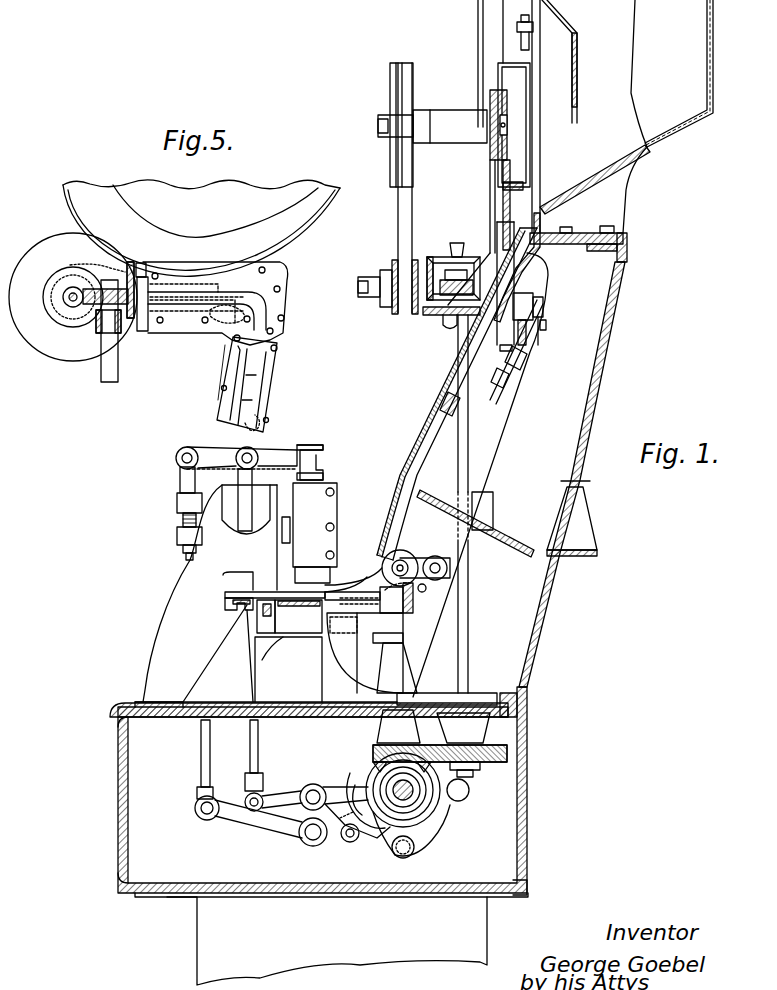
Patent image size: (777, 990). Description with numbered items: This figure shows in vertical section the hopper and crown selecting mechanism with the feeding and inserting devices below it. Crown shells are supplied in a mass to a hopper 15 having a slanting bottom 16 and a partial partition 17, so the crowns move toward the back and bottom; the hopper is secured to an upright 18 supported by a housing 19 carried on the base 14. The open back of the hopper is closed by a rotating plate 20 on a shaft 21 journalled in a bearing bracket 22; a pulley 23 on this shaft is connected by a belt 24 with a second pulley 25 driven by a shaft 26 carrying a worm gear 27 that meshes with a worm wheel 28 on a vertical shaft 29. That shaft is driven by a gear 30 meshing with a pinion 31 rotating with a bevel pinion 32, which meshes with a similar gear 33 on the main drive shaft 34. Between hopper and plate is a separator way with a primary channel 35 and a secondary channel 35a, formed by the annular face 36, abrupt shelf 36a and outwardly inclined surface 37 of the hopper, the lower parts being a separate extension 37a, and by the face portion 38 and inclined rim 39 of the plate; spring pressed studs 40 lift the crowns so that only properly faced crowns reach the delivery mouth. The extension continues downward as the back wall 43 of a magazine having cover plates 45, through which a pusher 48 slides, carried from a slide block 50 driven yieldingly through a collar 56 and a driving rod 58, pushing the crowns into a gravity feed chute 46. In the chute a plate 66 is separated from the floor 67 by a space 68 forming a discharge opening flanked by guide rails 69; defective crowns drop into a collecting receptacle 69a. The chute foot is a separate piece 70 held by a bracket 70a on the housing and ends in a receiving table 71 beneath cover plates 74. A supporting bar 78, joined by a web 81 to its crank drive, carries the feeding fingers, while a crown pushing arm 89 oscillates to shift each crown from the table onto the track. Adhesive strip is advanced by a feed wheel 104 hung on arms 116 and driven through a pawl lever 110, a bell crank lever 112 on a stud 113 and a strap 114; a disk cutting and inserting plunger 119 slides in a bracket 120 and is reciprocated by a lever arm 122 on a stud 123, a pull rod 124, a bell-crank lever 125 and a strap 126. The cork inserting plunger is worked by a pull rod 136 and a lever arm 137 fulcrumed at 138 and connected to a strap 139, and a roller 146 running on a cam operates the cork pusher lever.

In FIG. 1, the base 14 is at (347, 932).
In FIG. 5, the hopper 15 is at (201, 228).
In FIG. 1, the hopper 15 is at (668, 116).
In FIG. 1, the slanting bottom 16 is at (595, 179).
In FIG. 1, the partial partition 17 is at (578, 78).
In FIG. 1, the upright 18 is at (594, 400).
In FIG. 1, the housing 19 is at (527, 830).
In FIG. 1, the rotating plate 20 is at (498, 80).
In FIG. 1, the shaft 21 is at (378, 128).
In FIG. 1, the bearing bracket 22 is at (450, 126).
In FIG. 1, the pulley 23 is at (392, 103).
In FIG. 1, the belt 24 is at (411, 222).
In FIG. 1, the second pulley 25 is at (392, 268).
In FIG. 5, the shaft 26 is at (70, 300).
In FIG. 1, the shaft 26 is at (365, 279).
In FIG. 5, the worm gear 27 is at (75, 312).
In FIG. 1, the worm gear 27 is at (462, 268).
In FIG. 5, the worm wheel 28 is at (131, 262).
In FIG. 1, the worm wheel 28 is at (447, 327).
In FIG. 5, the vertical shaft 29 is at (117, 360).
In FIG. 1, the vertical shaft 29 is at (467, 478).
In FIG. 1, the gear 30 is at (507, 755).
In FIG. 1, the pinion 31 is at (380, 752).
In FIG. 1, the bevel pinion 32 is at (370, 770).
In FIG. 1, the gear 33 is at (417, 806).
In FIG. 1, the main drive shaft 34 is at (412, 795).
In FIG. 1, the primary channel 35 is at (542, 218).
In FIG. 1, the secondary channel 35a is at (535, 255).
In FIG. 1, the annular rim or face 36 is at (560, 224).
In FIG. 1, the ledge or shelf 36a is at (515, 225).
In FIG. 1, the outwardly inclined surface 37 is at (500, 235).
In FIG. 1, the extension 37a is at (628, 240).
In FIG. 1, the face portion 38 is at (540, 195).
In FIG. 1, the inclined rim 39 is at (525, 270).
In FIG. 1, the spring pressed studs 40 is at (533, 30).
In FIG. 1, the back wall 43 is at (543, 305).
In FIG. 5, the cover plates 45 is at (288, 272).
In FIG. 1, the cover plates 45 is at (533, 290).
In FIG. 5, the gravity feed chute 46 is at (222, 408).
In FIG. 1, the gravity feed chute 46 is at (428, 432).
In FIG. 5, the pusher 48 is at (212, 292).
In FIG. 1, the pusher 48 is at (482, 330).
In FIG. 5, the slide block 50 is at (232, 312).
In FIG. 1, the slide block 50 is at (540, 328).
In FIG. 1, the collar 56 is at (540, 318).
In FIG. 5, the driving rod 58 is at (170, 288).
In FIG. 1, the driving rod 58 is at (545, 312).
In FIG. 5, the plate 66 is at (268, 355).
In FIG. 1, the plate 66 is at (481, 342).
In FIG. 1, the floor 67 is at (455, 404).
In FIG. 5, the space 68 is at (257, 375).
In FIG. 1, the space 68 is at (471, 363).
In FIG. 5, the ledge or guide rail 69 is at (245, 403).
In FIG. 1, the ledge or guide rail 69 is at (465, 378).
In FIG. 1, the collecting receptacle 69a is at (520, 556).
In FIG. 1, the foot piece 70 is at (362, 580).
In FIG. 1, the bracket 70a is at (322, 690).
In FIG. 1, the receiving table 71 is at (315, 605).
In FIG. 1, the cover plates 74 is at (258, 590).
In FIG. 1, the supporting bar 78 is at (265, 620).
In FIG. 1, the web 81 is at (280, 640).
In FIG. 1, the crown pushing arm 89 is at (232, 590).
In FIG. 1, the feed wheel 104 is at (410, 550).
In FIG. 1, the pawl lever 110 is at (412, 598).
In FIG. 1, the bell crank lever 112 is at (346, 843).
In FIG. 1, the stud 113 is at (311, 789).
In FIG. 1, the strap 114 is at (378, 838).
In FIG. 1, the arms 116 is at (435, 561).
In FIG. 1, the disk cutting and inserting plunger 119 is at (323, 478).
In FIG. 1, the bracket 120 is at (337, 510).
In FIG. 1, the lever arm 122 is at (280, 462).
In FIG. 1, the stud 123 is at (180, 485).
In FIG. 1, the pull rod 124 is at (246, 531).
In FIG. 1, the bell-crank lever 125 is at (280, 798).
In FIG. 1, the strap 126 is at (437, 825).
In FIG. 1, the pull rod 136 is at (200, 775).
In FIG. 1, the lever arm 137 is at (272, 835).
In FIG. 1, the fulcrum 138 is at (313, 846).
In FIG. 1, the strap 139 is at (414, 848).
In FIG. 1, the roller 146 is at (469, 788).